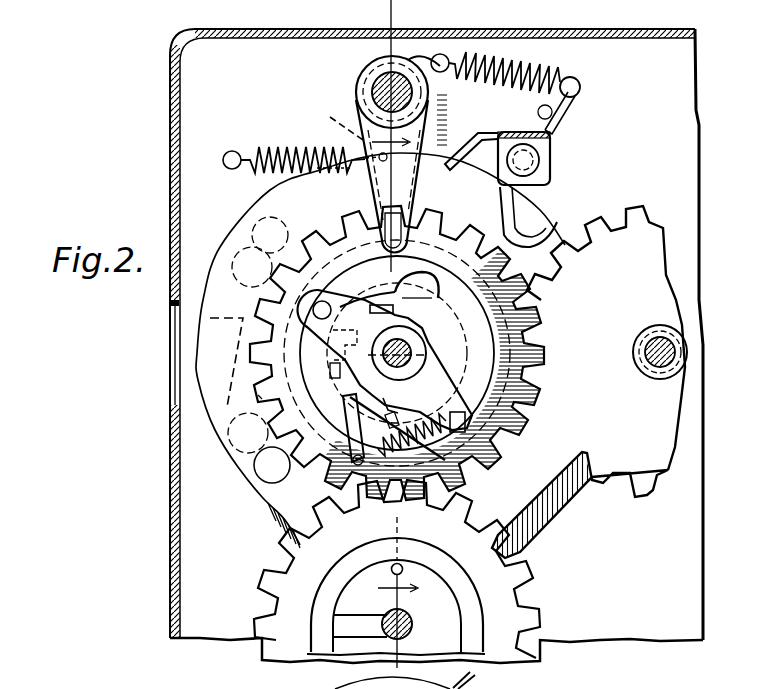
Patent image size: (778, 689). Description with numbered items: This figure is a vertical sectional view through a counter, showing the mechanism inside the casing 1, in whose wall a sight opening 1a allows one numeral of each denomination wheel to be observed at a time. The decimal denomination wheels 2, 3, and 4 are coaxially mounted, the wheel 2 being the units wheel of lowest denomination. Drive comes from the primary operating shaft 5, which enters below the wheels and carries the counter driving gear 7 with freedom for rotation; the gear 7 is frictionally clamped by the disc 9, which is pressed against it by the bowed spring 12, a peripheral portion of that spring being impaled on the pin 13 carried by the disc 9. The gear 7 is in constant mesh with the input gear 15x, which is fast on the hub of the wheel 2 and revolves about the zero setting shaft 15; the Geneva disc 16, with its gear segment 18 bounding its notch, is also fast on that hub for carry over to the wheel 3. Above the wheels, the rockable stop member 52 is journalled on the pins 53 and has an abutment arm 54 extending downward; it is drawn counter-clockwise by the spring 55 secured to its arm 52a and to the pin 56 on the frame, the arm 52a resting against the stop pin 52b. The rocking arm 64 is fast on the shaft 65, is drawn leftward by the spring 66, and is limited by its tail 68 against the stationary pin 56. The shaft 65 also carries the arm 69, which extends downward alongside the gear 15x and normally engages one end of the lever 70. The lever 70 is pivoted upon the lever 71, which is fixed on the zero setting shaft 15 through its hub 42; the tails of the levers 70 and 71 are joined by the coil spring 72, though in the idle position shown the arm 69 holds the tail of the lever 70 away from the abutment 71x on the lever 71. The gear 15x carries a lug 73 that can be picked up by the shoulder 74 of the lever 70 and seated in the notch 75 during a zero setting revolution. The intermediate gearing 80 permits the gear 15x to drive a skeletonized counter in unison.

The casing 1 is at (175, 500).
The sight opening 1a is at (177, 336).
The units wheel 2 is at (268, 494).
The denomination wheel 3 is at (550, 231).
The denomination wheel 4 is at (523, 217).
The primary operating shaft 5 is at (413, 624).
The counter driving gear 7 is at (273, 570).
The disc 9 is at (323, 590).
The bowed spring 12 is at (442, 595).
The pin 13 is at (393, 562).
The zero setting shaft 15 is at (403, 340).
The input gear 15x is at (262, 397).
The Geneva disc 16 is at (452, 326).
The gear segment 18 is at (350, 334).
The hub 42 is at (422, 377).
The rockable stop member 52 is at (551, 140).
The arm 52a is at (552, 132).
The stop pin 52b is at (567, 104).
The pins 53 is at (526, 163).
The abutment arm 54 is at (468, 137).
The spring 55 is at (548, 73).
The pin 56 is at (444, 55).
The rocking arm 64 is at (330, 121).
The shaft 65 is at (372, 88).
The spring 66 is at (290, 147).
The tail 68 is at (388, 53).
The arm 69 is at (417, 202).
The lever 70 is at (342, 273).
The lever 71 is at (435, 372).
The abutment 71x is at (377, 398).
The coil spring 72 is at (457, 470).
The lug 73 is at (379, 303).
The shoulder 74 is at (390, 429).
The notch 75 is at (333, 380).
The intermediate gearing 80 is at (627, 463).